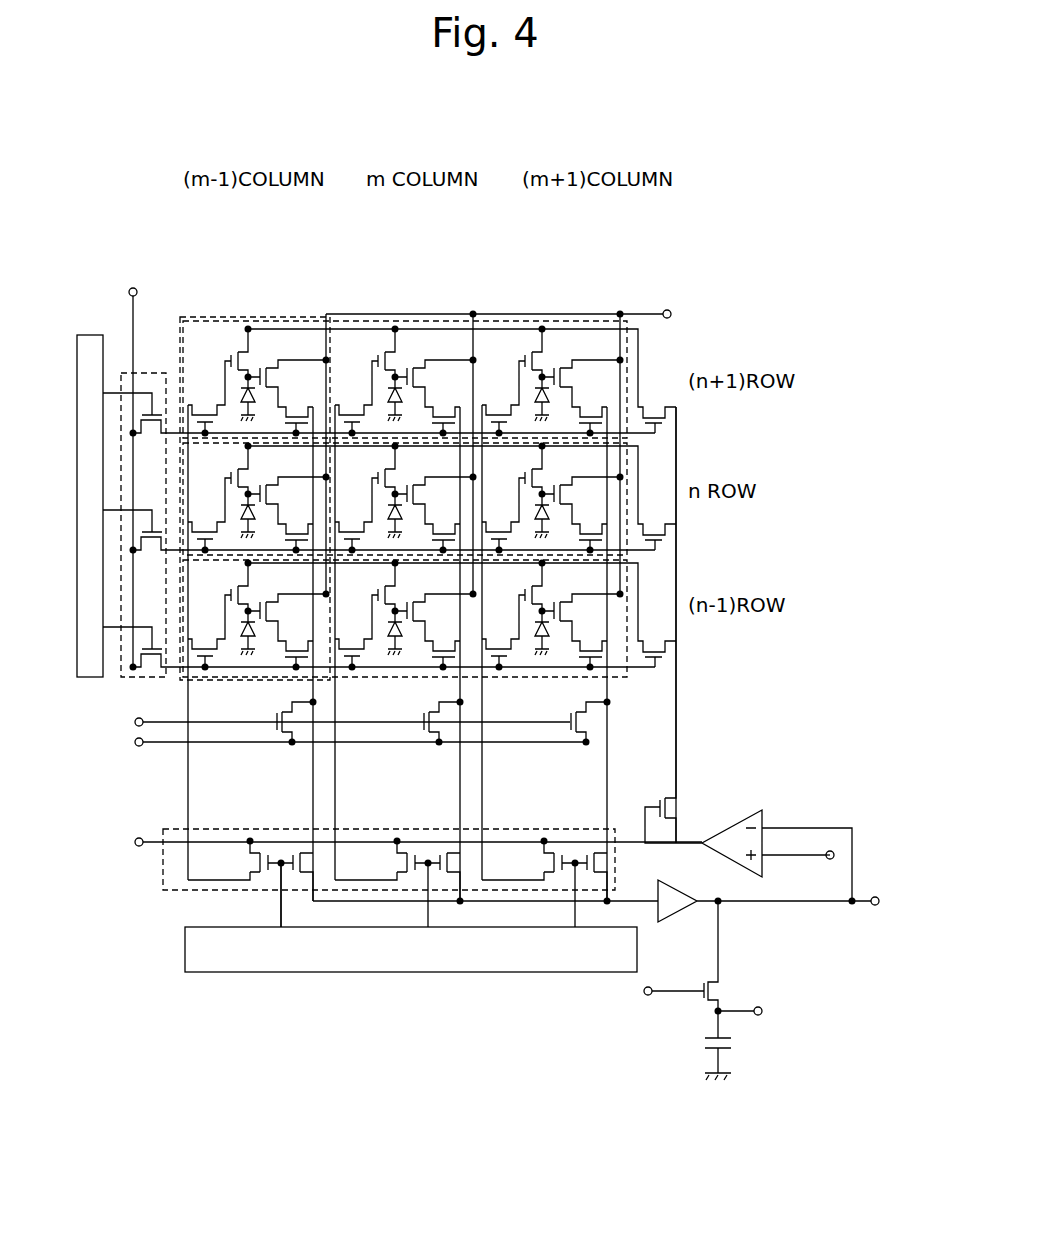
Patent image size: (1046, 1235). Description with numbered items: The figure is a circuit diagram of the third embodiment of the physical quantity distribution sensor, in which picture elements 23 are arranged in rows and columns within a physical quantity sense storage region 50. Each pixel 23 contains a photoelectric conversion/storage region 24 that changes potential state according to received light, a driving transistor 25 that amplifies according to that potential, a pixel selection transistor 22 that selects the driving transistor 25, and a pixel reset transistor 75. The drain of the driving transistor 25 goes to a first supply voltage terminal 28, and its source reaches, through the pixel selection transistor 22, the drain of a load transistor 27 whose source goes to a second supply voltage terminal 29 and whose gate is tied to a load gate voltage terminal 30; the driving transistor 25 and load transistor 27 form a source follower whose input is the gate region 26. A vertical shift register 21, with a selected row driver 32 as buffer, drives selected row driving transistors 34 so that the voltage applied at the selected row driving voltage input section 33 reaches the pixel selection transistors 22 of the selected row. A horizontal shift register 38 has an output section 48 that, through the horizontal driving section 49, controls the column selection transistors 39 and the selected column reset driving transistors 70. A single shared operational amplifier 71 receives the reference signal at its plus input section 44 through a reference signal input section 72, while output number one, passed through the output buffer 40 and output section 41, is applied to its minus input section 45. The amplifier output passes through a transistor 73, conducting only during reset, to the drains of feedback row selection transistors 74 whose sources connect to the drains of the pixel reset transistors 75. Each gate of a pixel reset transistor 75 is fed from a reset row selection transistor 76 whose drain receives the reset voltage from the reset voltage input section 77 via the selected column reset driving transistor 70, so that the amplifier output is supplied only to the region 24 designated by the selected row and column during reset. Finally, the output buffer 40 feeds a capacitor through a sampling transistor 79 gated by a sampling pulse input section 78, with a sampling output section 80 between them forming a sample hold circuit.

The vertical shift register 21 is at (88, 335).
The pixel selection transistor 22 is at (327, 360).
The picture element 23 is at (330, 328).
The photoelectric conversion/storage region 24 is at (243, 398).
The driving transistor 25 is at (268, 385).
The gate region 26 is at (258, 368).
The load transistor 27 is at (282, 735).
The first supply voltage terminal 28 is at (663, 311).
The second supply voltage terminal 29 is at (138, 746).
The load gate voltage terminal 30 is at (165, 712).
The selected row driver 32 is at (122, 373).
The selected row driving voltage input section 33 is at (132, 288).
The selected row driving transistor 34 is at (145, 418).
The horizontal shift register 38 is at (400, 972).
The column selection transistor 39 is at (318, 852).
The output buffer 40 is at (688, 895).
The output section 41 is at (878, 898).
The plus input section 44 is at (792, 828).
The minus input section 45 is at (835, 852).
The output section 48 is at (280, 972).
The horizontal driving section 49 is at (165, 890).
The physical quantity sense storage region 50 is at (495, 314).
The selected column reset driving transistor 70 is at (252, 850).
The operational amplifier 71 is at (758, 812).
The reference signal input section 72 is at (835, 853).
The transistor 73 is at (682, 809).
The feedback row selection transistor 74 is at (660, 405).
The pixel reset transistor 75 is at (233, 358).
The reset row selection transistor 76 is at (205, 405).
The reset voltage input section 77 is at (163, 850).
The sampling pulse input section 78 is at (648, 996).
The sampling transistor 79 is at (715, 991).
The sampling output section 80 is at (762, 1015).